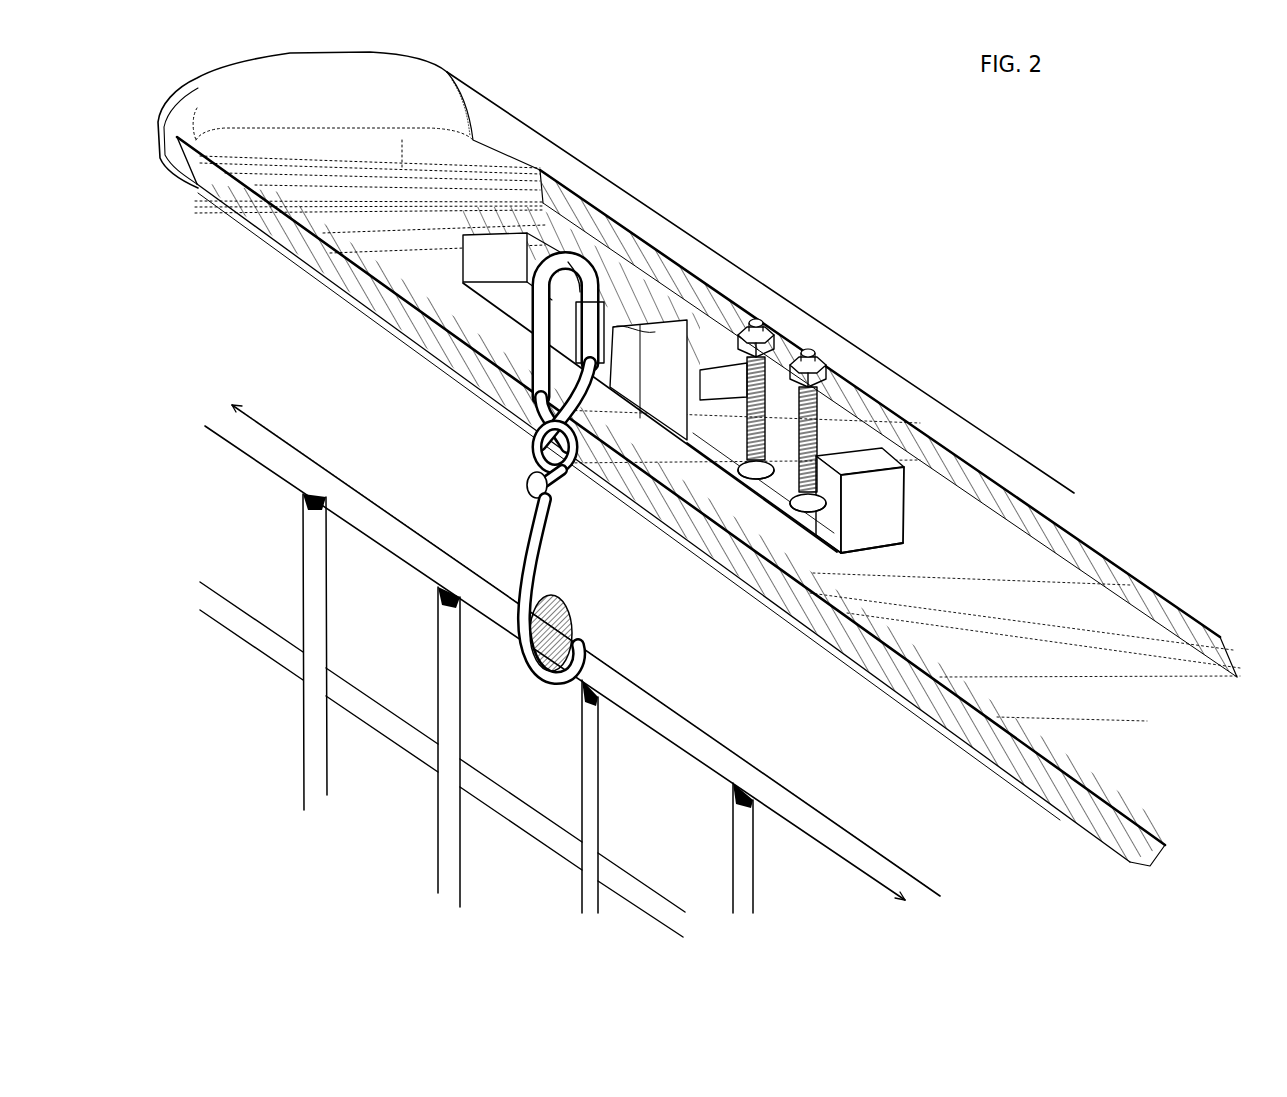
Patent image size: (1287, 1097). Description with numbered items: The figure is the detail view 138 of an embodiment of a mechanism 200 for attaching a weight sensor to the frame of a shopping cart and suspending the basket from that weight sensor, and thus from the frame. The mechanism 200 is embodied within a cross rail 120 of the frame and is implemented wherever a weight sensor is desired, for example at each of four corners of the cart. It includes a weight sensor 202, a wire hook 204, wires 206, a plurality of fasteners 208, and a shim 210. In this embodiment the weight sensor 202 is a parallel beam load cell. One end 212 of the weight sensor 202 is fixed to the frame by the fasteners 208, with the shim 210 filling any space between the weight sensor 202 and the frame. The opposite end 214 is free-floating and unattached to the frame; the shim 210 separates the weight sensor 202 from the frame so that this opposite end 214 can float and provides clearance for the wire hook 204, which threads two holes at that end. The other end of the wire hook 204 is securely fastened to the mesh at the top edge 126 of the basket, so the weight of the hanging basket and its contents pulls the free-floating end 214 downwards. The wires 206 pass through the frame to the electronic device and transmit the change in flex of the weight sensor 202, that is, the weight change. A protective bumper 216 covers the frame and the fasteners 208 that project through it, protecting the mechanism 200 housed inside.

The cross rail 120 is at (704, 459).
The top edge 126 is at (758, 780).
The detail view 138 is at (1195, 158).
The mechanism 200 is at (598, 432).
The weight sensor 202 is at (460, 283).
The wire hook 204 is at (540, 562).
The wires 206 is at (570, 229).
The fasteners 208 is at (828, 355).
The shim 210 is at (904, 476).
The end 212 is at (895, 510).
The opposite end 214 is at (335, 250).
The protective bumper 216 is at (622, 183).